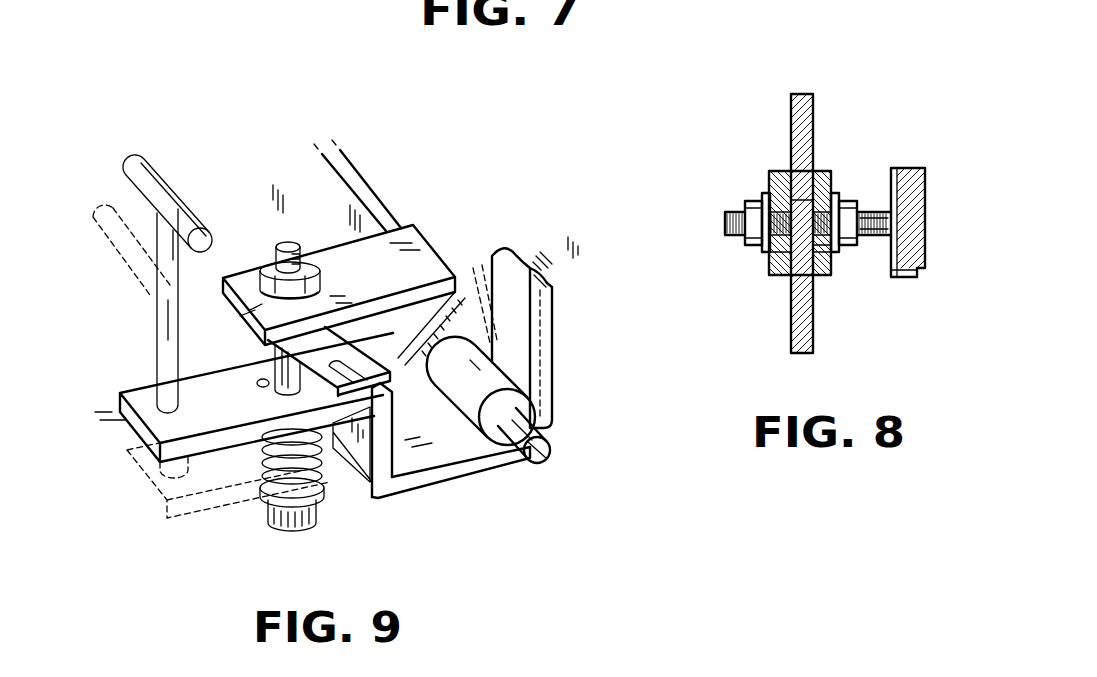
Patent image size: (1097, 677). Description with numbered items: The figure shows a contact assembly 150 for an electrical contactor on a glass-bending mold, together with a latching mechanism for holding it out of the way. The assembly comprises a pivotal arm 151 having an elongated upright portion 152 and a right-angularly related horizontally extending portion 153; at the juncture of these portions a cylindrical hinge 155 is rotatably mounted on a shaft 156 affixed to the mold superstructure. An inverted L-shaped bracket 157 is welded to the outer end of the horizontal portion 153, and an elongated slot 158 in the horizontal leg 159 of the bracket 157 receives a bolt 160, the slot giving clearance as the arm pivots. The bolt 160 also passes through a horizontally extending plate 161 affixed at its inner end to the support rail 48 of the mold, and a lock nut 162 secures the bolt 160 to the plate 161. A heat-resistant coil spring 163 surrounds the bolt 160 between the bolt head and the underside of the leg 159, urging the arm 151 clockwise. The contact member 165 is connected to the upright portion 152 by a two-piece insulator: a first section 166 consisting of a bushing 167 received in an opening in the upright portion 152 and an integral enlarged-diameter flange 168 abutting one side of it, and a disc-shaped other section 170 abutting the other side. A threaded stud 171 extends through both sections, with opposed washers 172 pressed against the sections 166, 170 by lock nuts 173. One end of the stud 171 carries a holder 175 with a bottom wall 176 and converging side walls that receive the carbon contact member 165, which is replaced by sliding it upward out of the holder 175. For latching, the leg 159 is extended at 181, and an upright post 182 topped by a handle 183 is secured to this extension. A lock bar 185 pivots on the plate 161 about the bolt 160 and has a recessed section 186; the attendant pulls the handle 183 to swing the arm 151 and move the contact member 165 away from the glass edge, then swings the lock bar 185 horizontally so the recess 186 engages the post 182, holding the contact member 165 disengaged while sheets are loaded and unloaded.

In FIG. 9, the support rail 48 is at (370, 192).
In FIG. 9, the contact assembly 150 is at (482, 528).
In FIG. 9, the pivotal arm 151 is at (500, 478).
In FIG. 8, the upright portion 152 is at (805, 97).
In FIG. 9, the upright portion 152 is at (548, 300).
In FIG. 9, the horizontally extending portion 153 is at (418, 455).
In FIG. 9, the cylindrical hinge 155 is at (460, 383).
In FIG. 9, the shaft 156 is at (548, 433).
In FIG. 9, the inverted L-shaped bracket 157 is at (384, 460).
In FIG. 9, the elongated slot 158 is at (262, 386).
In FIG. 9, the horizontal leg 159 is at (312, 395).
In FIG. 9, the bolt 160 is at (290, 245).
In FIG. 9, the horizontally extending plate 161 is at (420, 245).
In FIG. 9, the lock nut 162 is at (272, 265).
In FIG. 9, the heat-resistant coil spring 163 is at (267, 480).
In FIG. 8, the contact member 165 is at (918, 170).
In FIG. 8, the first section 166 is at (762, 178).
In FIG. 8, the bushing 167 is at (799, 200).
In FIG. 8, the flange 168 is at (777, 170).
In FIG. 8, the other section 170 is at (822, 276).
In FIG. 8, the threaded stud 171 is at (878, 237).
In FIG. 8, the washers 172 is at (837, 195).
In FIG. 8, the lock nuts 173 is at (855, 205).
In FIG. 8, the holder 175 is at (886, 298).
In FIG. 8, the bottom wall 176 is at (910, 276).
In FIG. 9, the extension 181 is at (138, 402).
In FIG. 9, the upright post 182 is at (163, 363).
In FIG. 9, the handle 183 is at (160, 170).
In FIG. 9, the lock bar 185 is at (320, 303).
In FIG. 9, the recessed section 186 is at (338, 360).